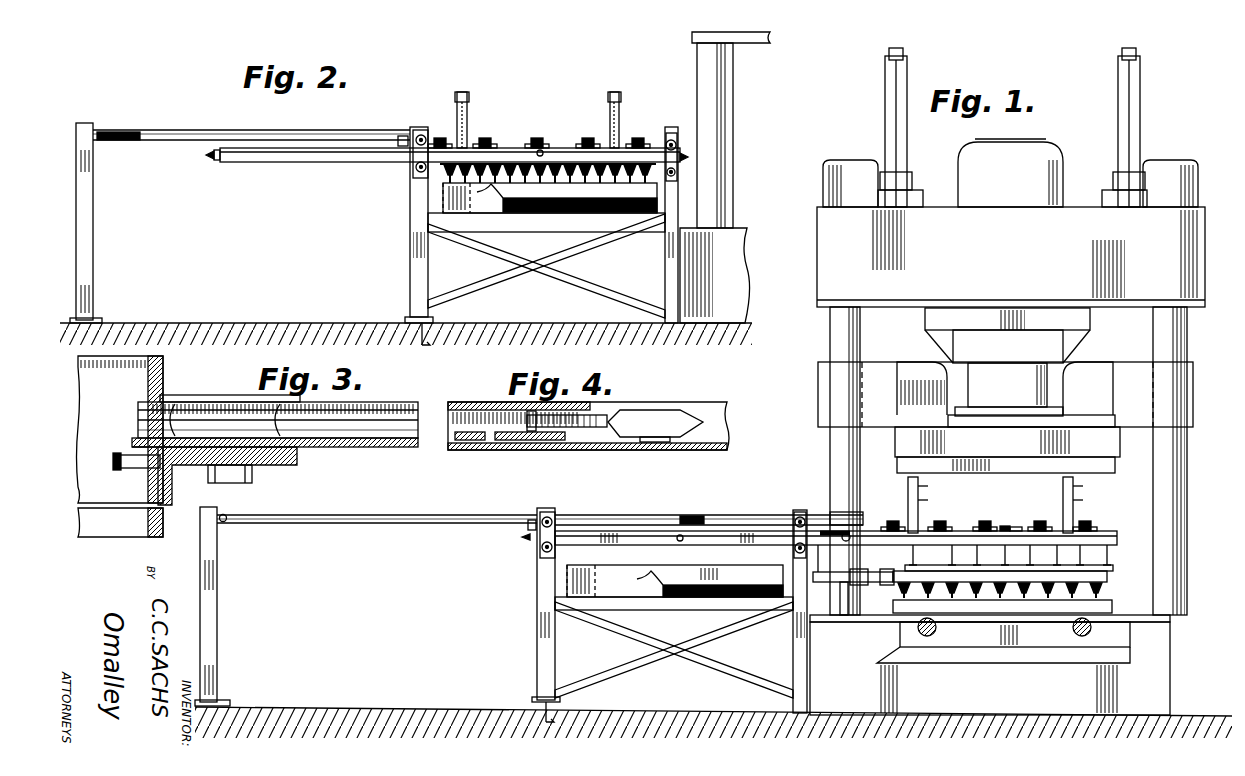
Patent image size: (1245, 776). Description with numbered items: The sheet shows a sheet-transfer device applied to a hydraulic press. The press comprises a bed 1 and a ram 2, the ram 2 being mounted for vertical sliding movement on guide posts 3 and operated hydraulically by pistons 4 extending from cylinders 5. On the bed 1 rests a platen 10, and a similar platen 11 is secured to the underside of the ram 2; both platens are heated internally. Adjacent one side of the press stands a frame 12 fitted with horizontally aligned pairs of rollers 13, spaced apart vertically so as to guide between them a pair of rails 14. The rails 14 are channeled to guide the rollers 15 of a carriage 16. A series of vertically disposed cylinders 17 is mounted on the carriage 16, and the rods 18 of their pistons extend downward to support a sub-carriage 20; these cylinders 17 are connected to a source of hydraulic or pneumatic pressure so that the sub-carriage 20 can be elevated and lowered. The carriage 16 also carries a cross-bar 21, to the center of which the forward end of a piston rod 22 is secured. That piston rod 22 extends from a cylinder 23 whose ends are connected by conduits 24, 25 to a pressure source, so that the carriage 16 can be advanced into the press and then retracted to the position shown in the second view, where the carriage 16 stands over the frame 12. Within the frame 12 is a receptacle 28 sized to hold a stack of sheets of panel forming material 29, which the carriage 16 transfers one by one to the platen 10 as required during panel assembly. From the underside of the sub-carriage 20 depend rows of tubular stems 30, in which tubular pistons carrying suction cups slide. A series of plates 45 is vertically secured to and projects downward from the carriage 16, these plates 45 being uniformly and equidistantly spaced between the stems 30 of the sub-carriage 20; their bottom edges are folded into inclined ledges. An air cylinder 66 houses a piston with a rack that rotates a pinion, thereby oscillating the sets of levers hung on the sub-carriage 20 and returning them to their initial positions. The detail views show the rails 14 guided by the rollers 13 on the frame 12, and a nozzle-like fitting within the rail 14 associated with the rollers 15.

In FIG. 2, the bed 1 is at (744, 276).
In FIG. 1, the bed 1 is at (1036, 648).
In FIG. 2, the ram 2 is at (750, 42).
In FIG. 1, the ram 2 is at (1193, 376).
In FIG. 2, the guide posts 3 is at (733, 115).
In FIG. 1, the guide posts 3 is at (830, 328).
In FIG. 1, the pistons 4 is at (1062, 367).
In FIG. 1, the cylinders 5 is at (1062, 163).
In FIG. 1, the platen 10 is at (1108, 598).
In FIG. 1, the platen 11 is at (1111, 473).
In FIG. 2, the frame 12 is at (405, 281).
In FIG. 3, the frame 12 is at (117, 547).
In FIG. 1, the frame 12 is at (537, 656).
In FIG. 2, the rollers 13 is at (422, 132).
In FIG. 3, the rollers 13 is at (206, 396).
In FIG. 1, the rollers 13 is at (558, 516).
In FIG. 2, the rails 14 is at (508, 148).
In FIG. 3, the rails 14 is at (395, 403).
In FIG. 4, the rails 14 is at (725, 407).
In FIG. 1, the rails 14 is at (628, 533).
In FIG. 4, the rollers 15 is at (673, 409).
In FIG. 1, the rollers 15 is at (858, 527).
In FIG. 1, the carriage 16 is at (1012, 530).
In FIG. 2, the cylinders 17 is at (469, 98).
In FIG. 1, the cylinders 17 is at (920, 486).
In FIG. 1, the piston rods 18 is at (908, 552).
In FIG. 1, the sub-carriage 20 is at (1113, 568).
In FIG. 1, the cross-bar 21 is at (856, 526).
In FIG. 2, the piston rod 22 is at (130, 132).
In FIG. 1, the piston rod 22 is at (712, 517).
In FIG. 2, the cylinder 23 is at (287, 132).
In FIG. 1, the cylinder 23 is at (443, 515).
In FIG. 1, the conduit 24 is at (228, 523).
In FIG. 2, the conduit 25 is at (404, 135).
In FIG. 1, the conduit 25 is at (540, 510).
In FIG. 2, the receptacle 28 is at (452, 198).
In FIG. 1, the receptacle 28 is at (578, 582).
In FIG. 2, the sheets of panel forming material 29 is at (541, 208).
In FIG. 1, the sheets of panel forming material 29 is at (690, 596).
In FIG. 1, the tubular stems 30 is at (1108, 578).
In FIG. 2, the plates 45 is at (556, 168).
In FIG. 1, the plates 45 is at (954, 564).
In FIG. 1, the air cylinder 66 is at (846, 614).